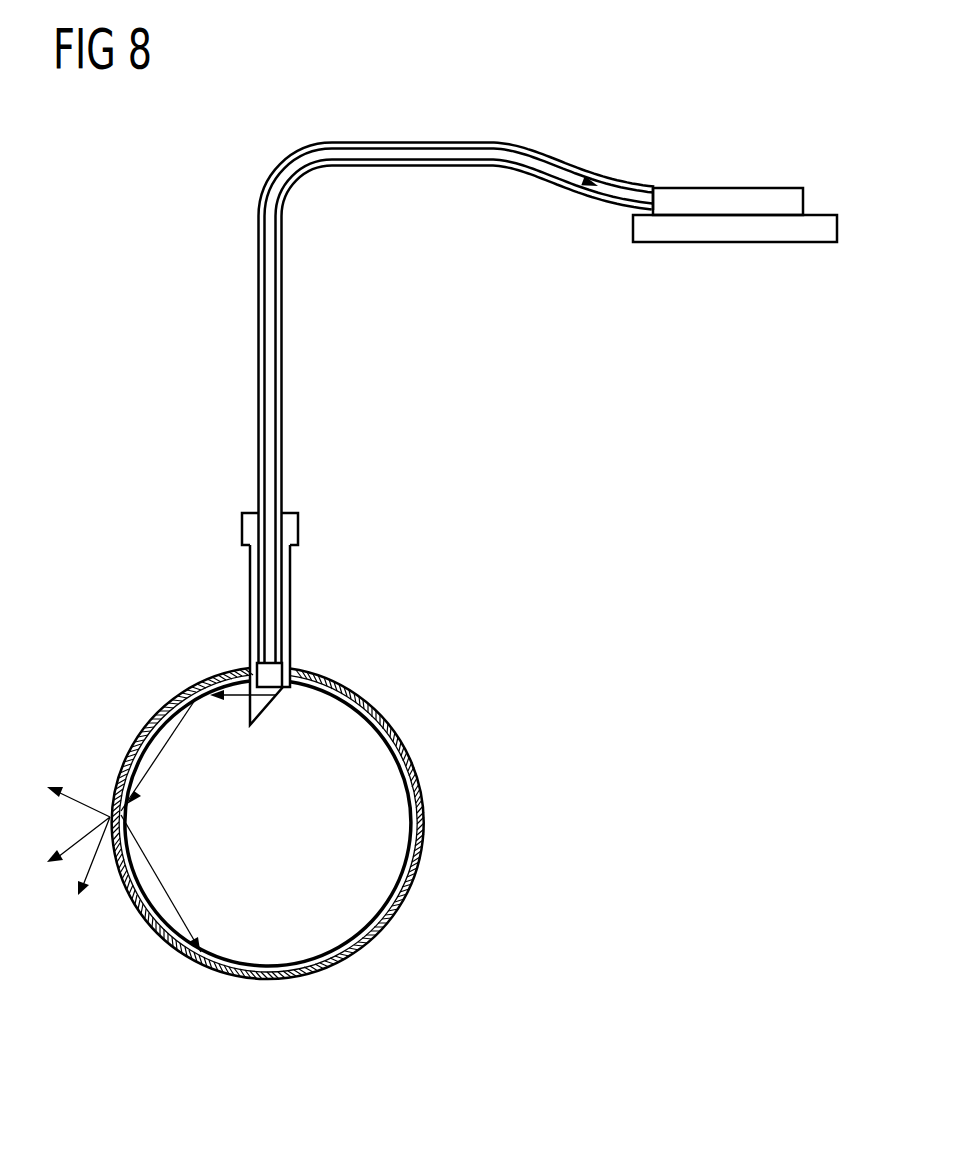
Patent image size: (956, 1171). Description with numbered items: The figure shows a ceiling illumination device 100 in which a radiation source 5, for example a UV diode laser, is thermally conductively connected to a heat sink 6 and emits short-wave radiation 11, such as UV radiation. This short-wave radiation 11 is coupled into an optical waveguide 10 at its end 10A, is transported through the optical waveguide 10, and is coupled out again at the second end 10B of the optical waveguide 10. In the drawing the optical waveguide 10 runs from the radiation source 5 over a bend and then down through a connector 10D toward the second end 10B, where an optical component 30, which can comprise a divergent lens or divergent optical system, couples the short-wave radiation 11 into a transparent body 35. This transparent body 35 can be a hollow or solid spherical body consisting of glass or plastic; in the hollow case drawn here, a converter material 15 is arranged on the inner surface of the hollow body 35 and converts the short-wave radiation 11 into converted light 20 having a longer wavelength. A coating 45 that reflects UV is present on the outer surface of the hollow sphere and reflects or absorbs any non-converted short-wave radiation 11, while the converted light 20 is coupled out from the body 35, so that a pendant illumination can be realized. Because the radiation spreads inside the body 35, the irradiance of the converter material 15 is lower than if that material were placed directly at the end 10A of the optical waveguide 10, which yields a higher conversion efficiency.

The ceiling illumination device 100 is at (164, 177).
The optical waveguide 10 is at (435, 142).
The end of the optical waveguide 10A is at (650, 186).
The second end of the optical waveguide 10B is at (256, 664).
The connector of light guide 10D is at (298, 527).
The short-wave radiation 11 is at (615, 207).
The radiation source 5 is at (762, 197).
The heat sink 6 is at (750, 232).
The optical component 30 is at (272, 690).
The converter material 15 is at (402, 760).
The transparent body 35 is at (388, 822).
The coating that reflects UV 45 is at (393, 917).
The converted light 20 is at (90, 802).